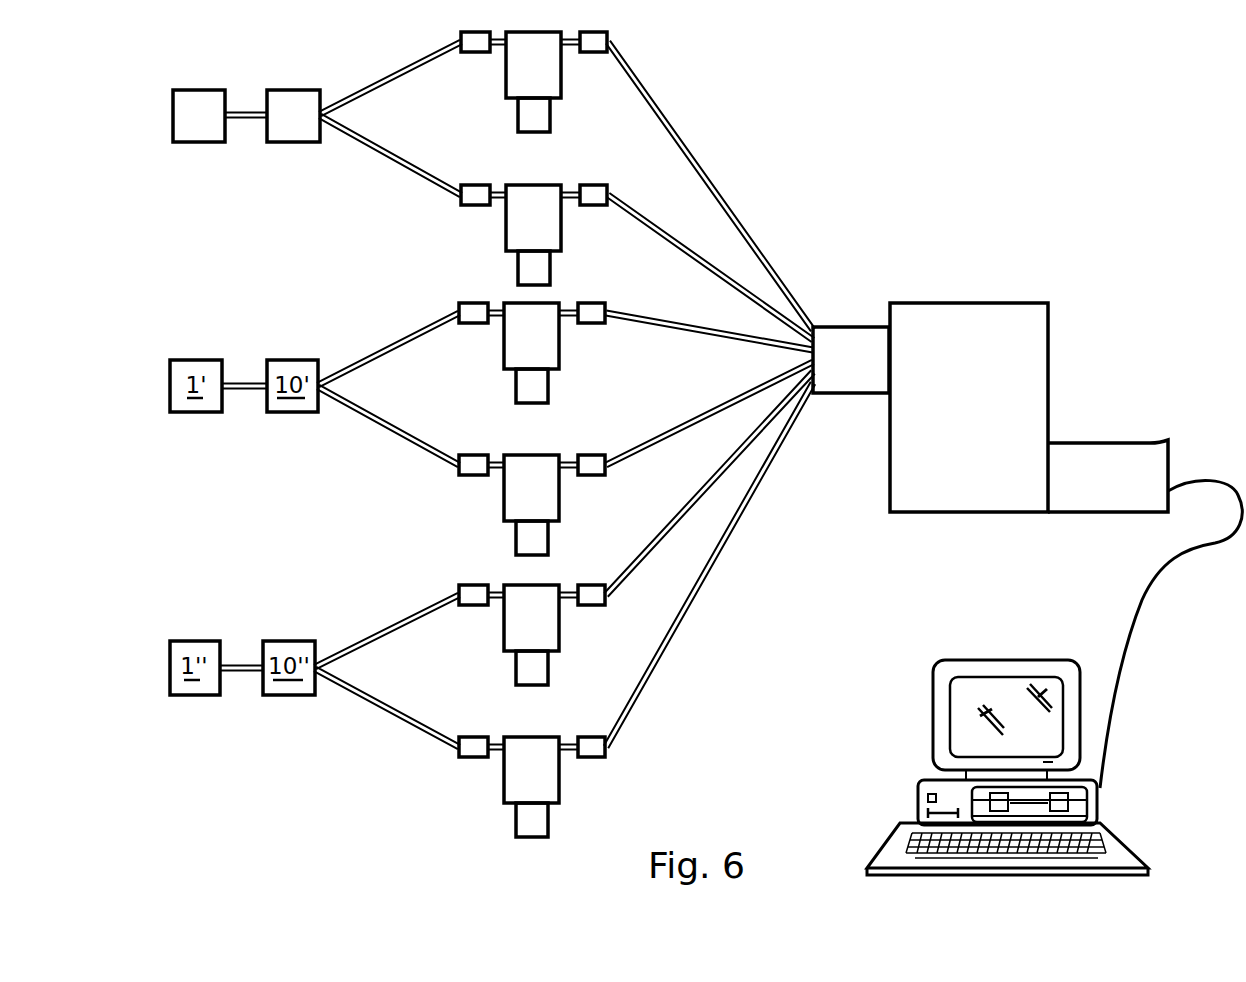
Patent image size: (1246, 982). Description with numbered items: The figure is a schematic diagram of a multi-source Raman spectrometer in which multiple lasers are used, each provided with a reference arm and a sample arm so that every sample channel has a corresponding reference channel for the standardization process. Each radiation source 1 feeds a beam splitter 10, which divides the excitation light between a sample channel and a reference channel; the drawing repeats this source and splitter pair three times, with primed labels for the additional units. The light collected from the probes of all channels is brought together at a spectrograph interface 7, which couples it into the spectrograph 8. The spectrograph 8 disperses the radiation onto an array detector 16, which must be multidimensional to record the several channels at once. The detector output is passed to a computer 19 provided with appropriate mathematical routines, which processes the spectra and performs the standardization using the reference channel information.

The radiation source 1 is at (191, 128).
The beam splitter 10 is at (278, 128).
The spectrograph interface 7 is at (840, 377).
The spectrograph 8 is at (957, 379).
The array detector 16 is at (1126, 494).
The computer 19 is at (918, 785).